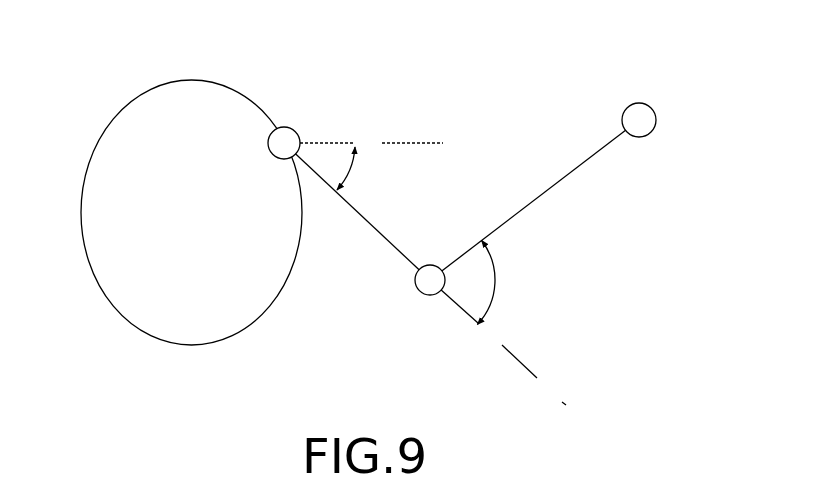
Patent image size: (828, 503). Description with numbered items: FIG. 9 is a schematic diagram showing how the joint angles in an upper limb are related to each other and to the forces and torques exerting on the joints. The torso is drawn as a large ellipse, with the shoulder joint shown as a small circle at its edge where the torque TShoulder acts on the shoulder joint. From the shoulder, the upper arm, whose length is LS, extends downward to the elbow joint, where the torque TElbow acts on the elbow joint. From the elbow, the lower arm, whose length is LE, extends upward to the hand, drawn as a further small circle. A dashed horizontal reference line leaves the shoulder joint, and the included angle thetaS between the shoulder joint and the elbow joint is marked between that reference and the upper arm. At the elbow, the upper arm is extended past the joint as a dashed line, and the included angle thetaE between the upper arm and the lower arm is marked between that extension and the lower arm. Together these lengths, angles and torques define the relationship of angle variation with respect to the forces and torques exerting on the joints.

The torque exerting on the shoulder joint TShoulder is at (312, 127).
The torque exerting on the elbow joint TElbow is at (424, 300).
The length of the upper arm LS is at (360, 220).
The length of the lower arm LE is at (548, 190).
The included angle between the shoulder joint and the elbow joint thetaS is at (362, 170).
The included angle between the upper arm and the lower arm thetaE is at (504, 283).